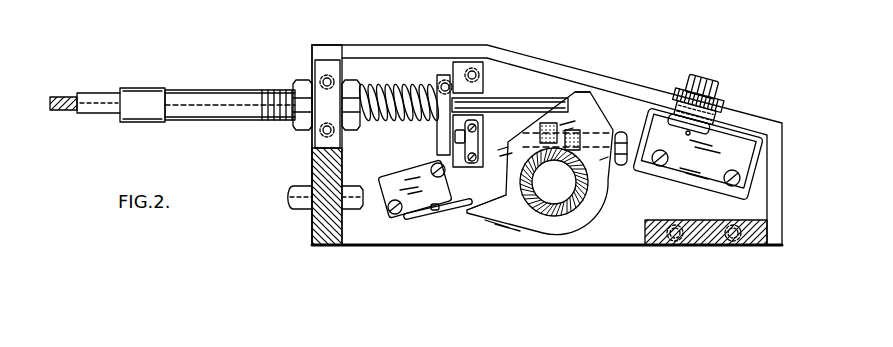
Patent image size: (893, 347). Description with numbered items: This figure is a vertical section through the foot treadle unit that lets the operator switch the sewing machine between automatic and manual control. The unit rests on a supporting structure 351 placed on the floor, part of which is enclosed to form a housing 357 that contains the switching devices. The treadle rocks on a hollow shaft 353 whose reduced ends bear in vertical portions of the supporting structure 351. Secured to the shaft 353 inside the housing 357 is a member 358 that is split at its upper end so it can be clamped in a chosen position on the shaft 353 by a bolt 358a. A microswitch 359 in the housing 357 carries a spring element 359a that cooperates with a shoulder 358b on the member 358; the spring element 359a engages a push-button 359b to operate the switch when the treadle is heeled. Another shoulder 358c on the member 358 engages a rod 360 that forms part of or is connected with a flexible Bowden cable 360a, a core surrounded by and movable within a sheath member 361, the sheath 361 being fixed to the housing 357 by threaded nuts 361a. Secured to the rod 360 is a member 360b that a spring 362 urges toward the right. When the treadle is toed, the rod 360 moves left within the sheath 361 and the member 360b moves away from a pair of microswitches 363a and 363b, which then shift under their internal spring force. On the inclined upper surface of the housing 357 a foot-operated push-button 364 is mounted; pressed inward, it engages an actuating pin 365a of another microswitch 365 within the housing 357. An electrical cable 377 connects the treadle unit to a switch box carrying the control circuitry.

The supporting structure 351 is at (322, 237).
The hollow shaft 353 is at (572, 216).
The housing 357 is at (473, 48).
The member 358 is at (515, 231).
The bolt 358a is at (622, 137).
The shoulder 358b is at (488, 202).
The shoulder 358c is at (573, 90).
The microswitch 359 is at (388, 218).
The spring element 359a is at (420, 218).
The push-button 359b is at (437, 211).
The rod 360 is at (548, 100).
The Bowden cable 360a is at (61, 110).
The member 360b is at (443, 130).
The sheath member 361 is at (214, 105).
The threaded nuts 361a is at (300, 88).
The spring 362 is at (403, 82).
The microswitch 363a is at (487, 120).
The microswitch 363b is at (478, 142).
The push-button 364 is at (700, 85).
The microswitch 365 is at (672, 168).
The actuating pin 365a is at (690, 133).
The electrical cable 377 is at (297, 210).